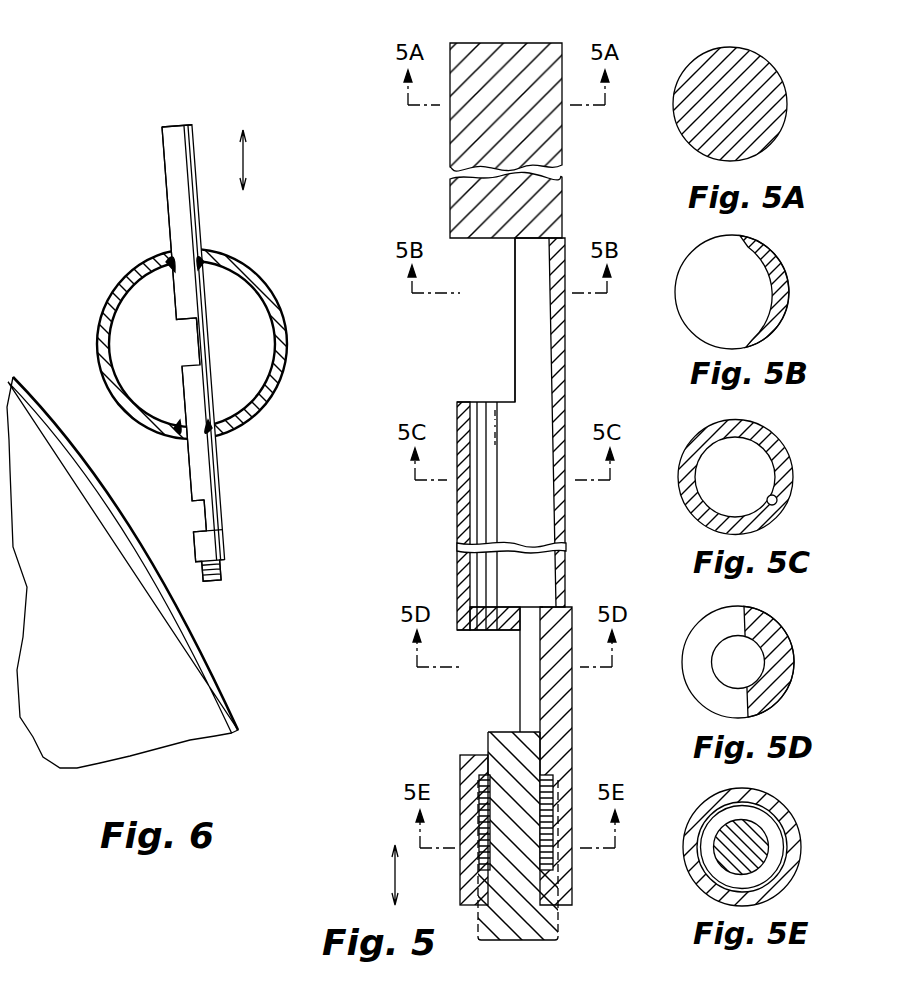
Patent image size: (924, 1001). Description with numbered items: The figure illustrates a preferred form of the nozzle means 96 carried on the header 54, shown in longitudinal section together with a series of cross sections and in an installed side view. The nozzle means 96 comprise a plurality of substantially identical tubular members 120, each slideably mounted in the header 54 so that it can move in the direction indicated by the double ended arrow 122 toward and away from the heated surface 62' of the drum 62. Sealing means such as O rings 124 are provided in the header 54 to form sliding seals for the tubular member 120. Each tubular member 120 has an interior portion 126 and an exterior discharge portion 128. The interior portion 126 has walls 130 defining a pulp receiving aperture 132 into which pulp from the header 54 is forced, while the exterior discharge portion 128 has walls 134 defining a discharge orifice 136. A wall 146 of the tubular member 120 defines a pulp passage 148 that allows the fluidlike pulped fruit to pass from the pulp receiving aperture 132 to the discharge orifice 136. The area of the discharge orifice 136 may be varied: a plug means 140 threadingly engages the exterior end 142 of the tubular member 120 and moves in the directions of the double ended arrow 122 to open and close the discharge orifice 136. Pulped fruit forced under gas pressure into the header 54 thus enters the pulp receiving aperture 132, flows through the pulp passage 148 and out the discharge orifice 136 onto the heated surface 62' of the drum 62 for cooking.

In FIG. 6, the header 54 is at (122, 278).
In FIG. 6, the drum 62 is at (122, 554).
In FIG. 6, the heated surface 62' is at (203, 647).
In FIG. 5, the nozzle means 96 is at (563, 43).
In FIG. 6, the nozzle means 96 is at (205, 328).
In FIG. 5, the tubular member 120 is at (563, 158).
In FIG. 6, the tubular member 120 is at (154, 224).
In FIG. 5, the double ended arrow 122 is at (398, 878).
In FIG. 6, the double ended arrow 122 is at (244, 160).
In FIG. 6, the O rings 124 is at (203, 250).
In FIG. 6, the interior portion 126 is at (232, 341).
In FIG. 6, the exterior discharge portion 128 is at (241, 528).
In FIG. 5, the walls 130 is at (500, 240).
In FIG. 6, the walls 130 is at (164, 325).
In FIG. 5, the pulp receiving aperture 132 is at (503, 320).
In FIG. 5B, the pulp receiving aperture 132 is at (732, 292).
In FIG. 6, the pulp receiving aperture 132 is at (166, 345).
In FIG. 5, the walls 134 is at (478, 632).
In FIG. 5D, the walls 134 is at (693, 697).
In FIG. 6, the walls 134 is at (172, 436).
In FIG. 5, the discharge orifice 136 is at (512, 773).
In FIG. 5D, the discharge orifice 136 is at (738, 662).
In FIG. 6, the discharge orifice 136 is at (191, 516).
In FIG. 5, the plug means 140 is at (560, 935).
In FIG. 5E, the plug means 140 is at (768, 849).
In FIG. 6, the plug means 140 is at (248, 565).
In FIG. 5, the exterior end 142 is at (573, 905).
In FIG. 5, the wall 146 is at (474, 461).
In FIG. 5C, the wall 146 is at (777, 504).
In FIG. 5, the pulp passage 148 is at (498, 516).
In FIG. 5C, the pulp passage 148 is at (735, 476).